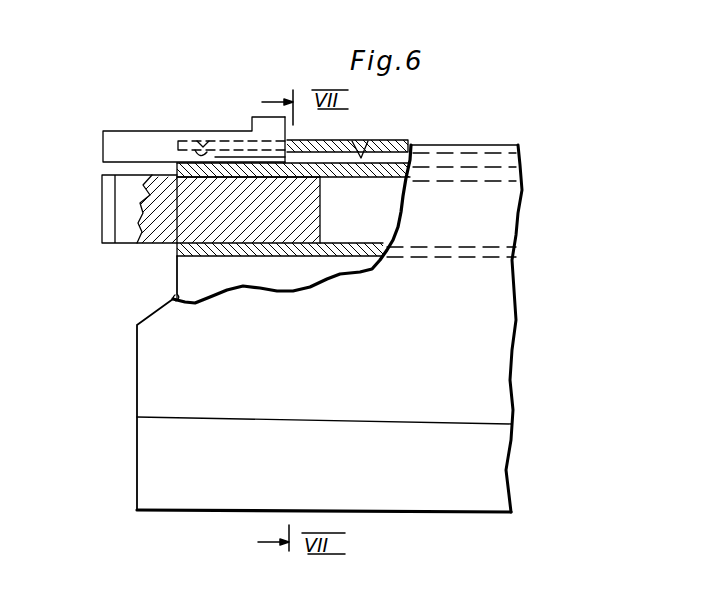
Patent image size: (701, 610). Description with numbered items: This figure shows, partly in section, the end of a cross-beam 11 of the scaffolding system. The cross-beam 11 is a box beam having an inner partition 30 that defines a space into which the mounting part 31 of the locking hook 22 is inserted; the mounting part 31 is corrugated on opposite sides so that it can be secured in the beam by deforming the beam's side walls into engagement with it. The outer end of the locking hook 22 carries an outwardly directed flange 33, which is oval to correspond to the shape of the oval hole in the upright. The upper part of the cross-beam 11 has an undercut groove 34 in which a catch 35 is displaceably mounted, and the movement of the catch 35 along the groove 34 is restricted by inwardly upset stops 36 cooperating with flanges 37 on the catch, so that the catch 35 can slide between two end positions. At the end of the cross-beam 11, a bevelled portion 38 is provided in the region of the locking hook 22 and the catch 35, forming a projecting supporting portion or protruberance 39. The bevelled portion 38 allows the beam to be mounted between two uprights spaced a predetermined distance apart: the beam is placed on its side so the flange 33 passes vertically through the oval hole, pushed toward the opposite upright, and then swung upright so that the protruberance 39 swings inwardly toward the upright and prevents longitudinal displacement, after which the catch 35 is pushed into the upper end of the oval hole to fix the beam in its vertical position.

The cross-beam 11 is at (135, 352).
The locking hook 22 is at (127, 227).
The inner partition 30 is at (459, 250).
The mounting part 31 is at (310, 208).
The flange 33 is at (104, 210).
The undercut groove 34 is at (460, 160).
The catch 35 is at (120, 142).
The stops 36 is at (198, 140).
The flanges 37 is at (271, 158).
The bevelled portion 38 is at (173, 275).
The protruberance 39 is at (142, 378).